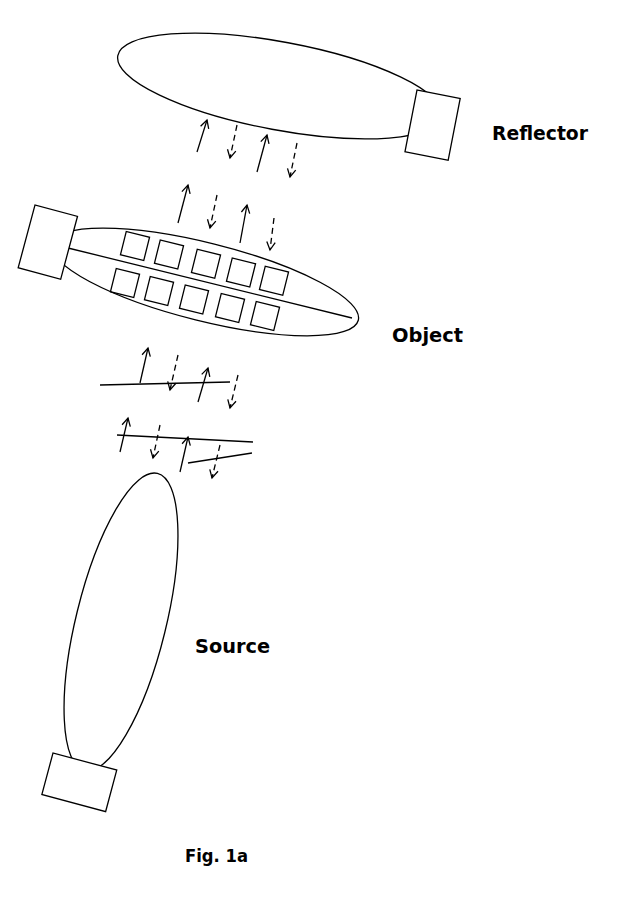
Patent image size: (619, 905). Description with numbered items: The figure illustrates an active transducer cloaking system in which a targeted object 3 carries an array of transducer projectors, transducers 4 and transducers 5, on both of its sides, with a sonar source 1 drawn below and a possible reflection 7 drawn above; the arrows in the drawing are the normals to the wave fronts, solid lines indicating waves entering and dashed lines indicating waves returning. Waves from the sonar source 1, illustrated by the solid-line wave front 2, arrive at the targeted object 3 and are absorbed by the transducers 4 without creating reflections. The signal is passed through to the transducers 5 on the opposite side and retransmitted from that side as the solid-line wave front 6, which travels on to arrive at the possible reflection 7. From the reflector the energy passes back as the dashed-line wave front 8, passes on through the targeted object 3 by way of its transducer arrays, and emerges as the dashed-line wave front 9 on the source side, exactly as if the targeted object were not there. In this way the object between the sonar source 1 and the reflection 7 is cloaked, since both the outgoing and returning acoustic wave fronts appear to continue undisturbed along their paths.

The sonar source 1 is at (142, 573).
The wave front (solid lines) 2 is at (194, 448).
The targeted object 3 is at (360, 312).
The transducers 4 is at (282, 322).
The transducers 5 is at (288, 292).
The wave front (solid lines) 6 is at (270, 150).
The reflection 7 is at (330, 73).
The wave front (dashed lines) 8 is at (228, 133).
The wave front (dashed lines) 9 is at (168, 363).